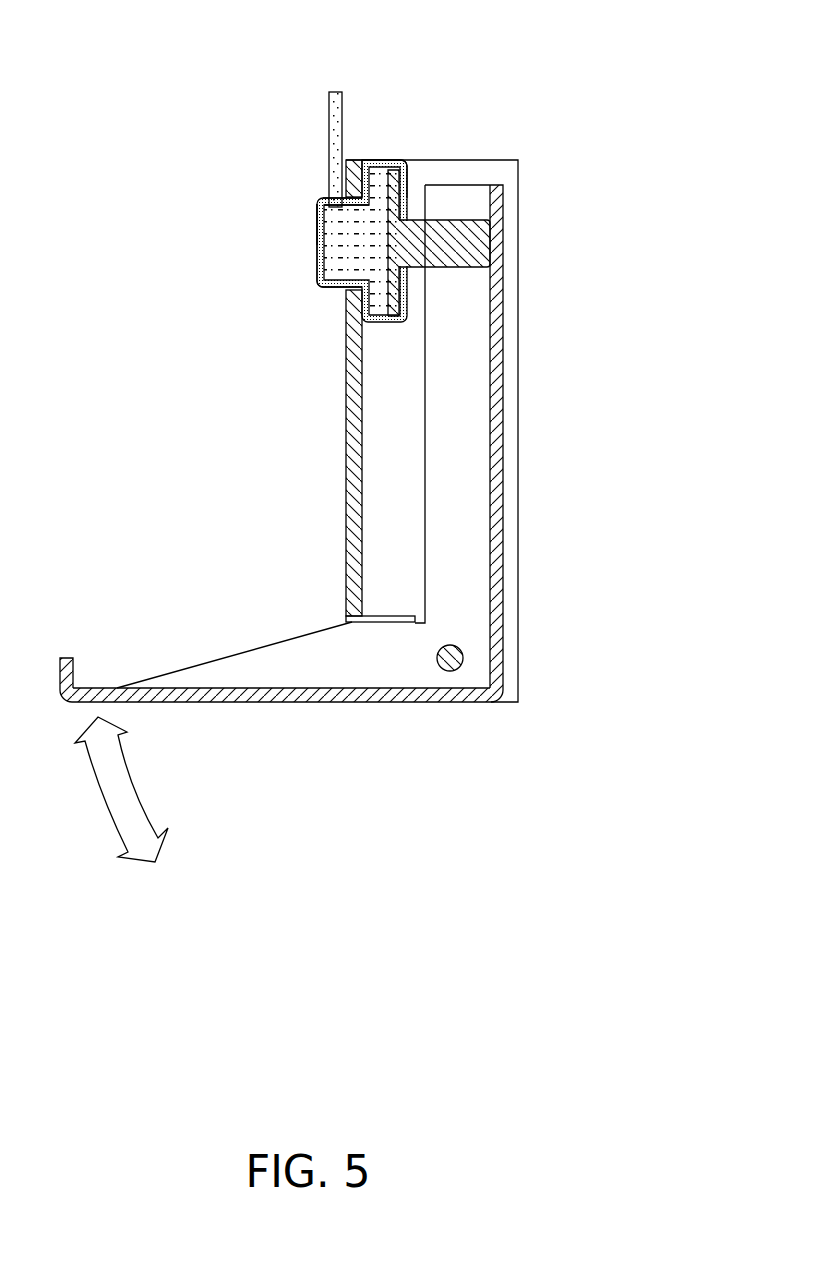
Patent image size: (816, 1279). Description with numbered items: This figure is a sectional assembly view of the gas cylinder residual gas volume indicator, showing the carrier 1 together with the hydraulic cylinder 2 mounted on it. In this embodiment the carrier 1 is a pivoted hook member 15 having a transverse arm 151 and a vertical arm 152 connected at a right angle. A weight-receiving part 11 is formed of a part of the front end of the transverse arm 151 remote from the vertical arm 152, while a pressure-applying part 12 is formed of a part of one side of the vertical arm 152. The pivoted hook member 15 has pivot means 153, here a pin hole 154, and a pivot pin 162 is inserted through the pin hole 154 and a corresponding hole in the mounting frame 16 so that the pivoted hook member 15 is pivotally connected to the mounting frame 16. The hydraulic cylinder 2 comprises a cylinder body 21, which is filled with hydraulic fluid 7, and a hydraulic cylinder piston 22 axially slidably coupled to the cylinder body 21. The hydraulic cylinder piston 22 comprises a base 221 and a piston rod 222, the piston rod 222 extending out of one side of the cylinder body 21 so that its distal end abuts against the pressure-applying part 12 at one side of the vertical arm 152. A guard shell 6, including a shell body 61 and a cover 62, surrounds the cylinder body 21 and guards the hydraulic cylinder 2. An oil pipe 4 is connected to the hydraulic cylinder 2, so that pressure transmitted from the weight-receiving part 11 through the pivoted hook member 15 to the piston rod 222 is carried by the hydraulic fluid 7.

The carrier 1 is at (503, 528).
The pivoted hook member 15 is at (295, 431).
The weight-receiving part 11 is at (90, 687).
The pressure-applying part 12 is at (492, 240).
The transverse arm 151 is at (292, 670).
The vertical arm 152 is at (460, 398).
The pivot means 153 is at (464, 657).
The pin hole 154 is at (461, 737).
The mounting frame 16 is at (353, 432).
The pivot pin 162 is at (453, 673).
The hydraulic cylinder 2 is at (317, 250).
The cylinder body 21 is at (317, 224).
The hydraulic cylinder piston 22 is at (458, 222).
The base 221 is at (402, 160).
The piston rod 222 is at (440, 220).
The oil pipe 4 is at (327, 132).
The guard shell 6 is at (317, 284).
The shell body 61 is at (380, 160).
The cover 62 is at (318, 270).
The hydraulic fluid 7 is at (318, 222).